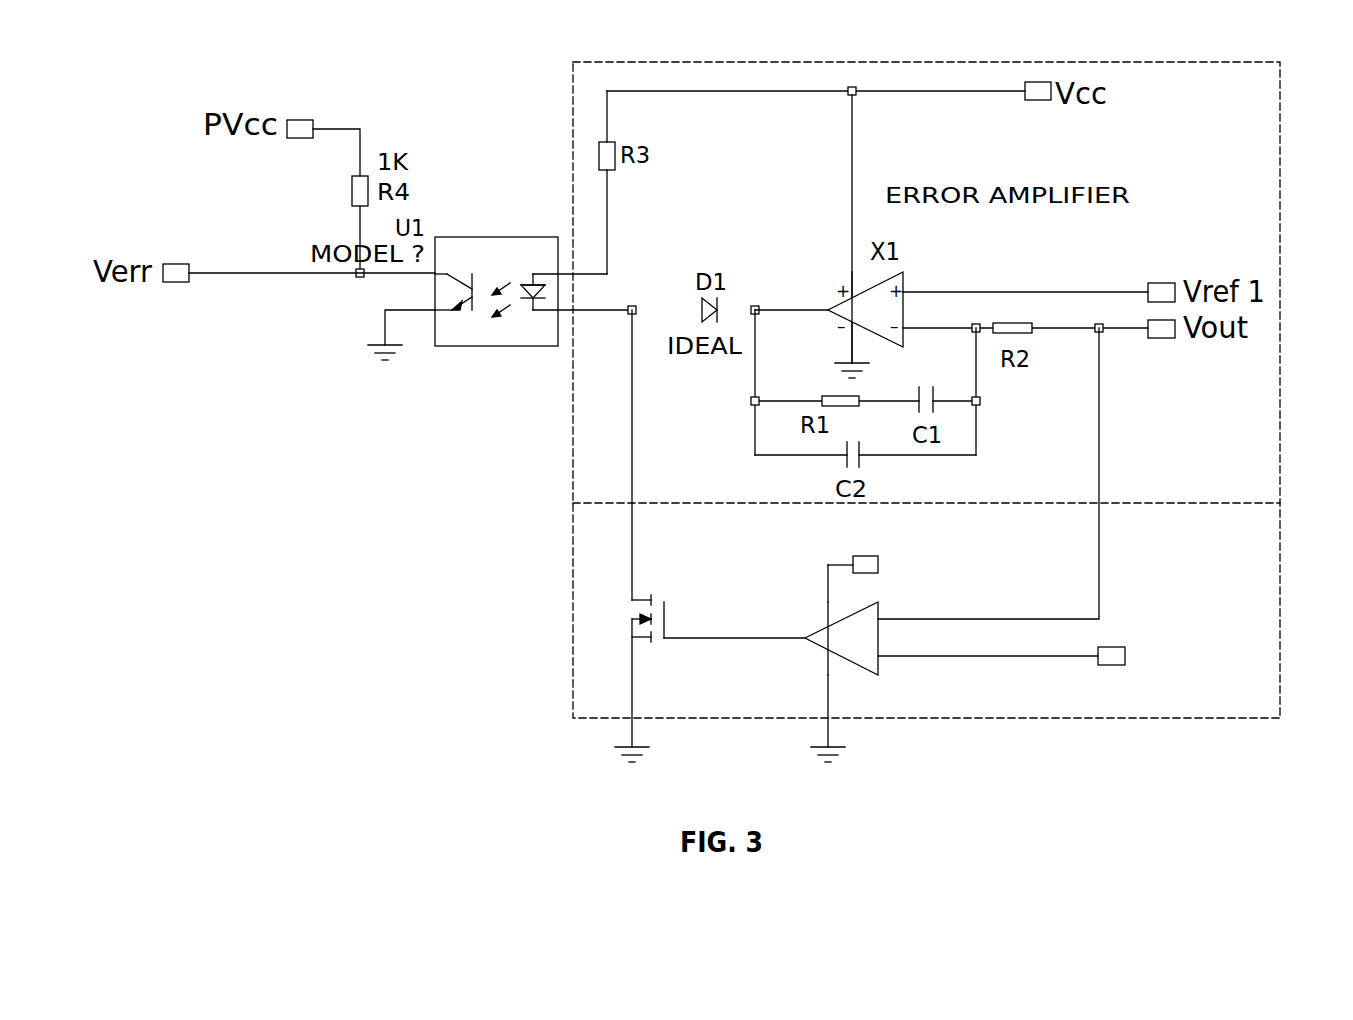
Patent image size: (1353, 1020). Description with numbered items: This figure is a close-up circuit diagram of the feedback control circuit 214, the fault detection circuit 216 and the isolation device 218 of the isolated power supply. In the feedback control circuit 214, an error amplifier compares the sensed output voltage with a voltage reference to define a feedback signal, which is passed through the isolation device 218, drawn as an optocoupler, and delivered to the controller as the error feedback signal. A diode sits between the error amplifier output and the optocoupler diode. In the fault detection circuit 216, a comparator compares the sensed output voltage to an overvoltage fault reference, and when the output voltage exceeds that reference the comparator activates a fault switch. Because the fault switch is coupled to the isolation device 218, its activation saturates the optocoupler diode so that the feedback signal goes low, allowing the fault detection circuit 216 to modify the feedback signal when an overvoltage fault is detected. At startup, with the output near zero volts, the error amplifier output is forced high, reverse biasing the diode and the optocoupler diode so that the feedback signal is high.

The feedback control circuit 214 is at (645, 62).
The fault detection circuit 216 is at (573, 655).
The isolation device 218 is at (500, 237).